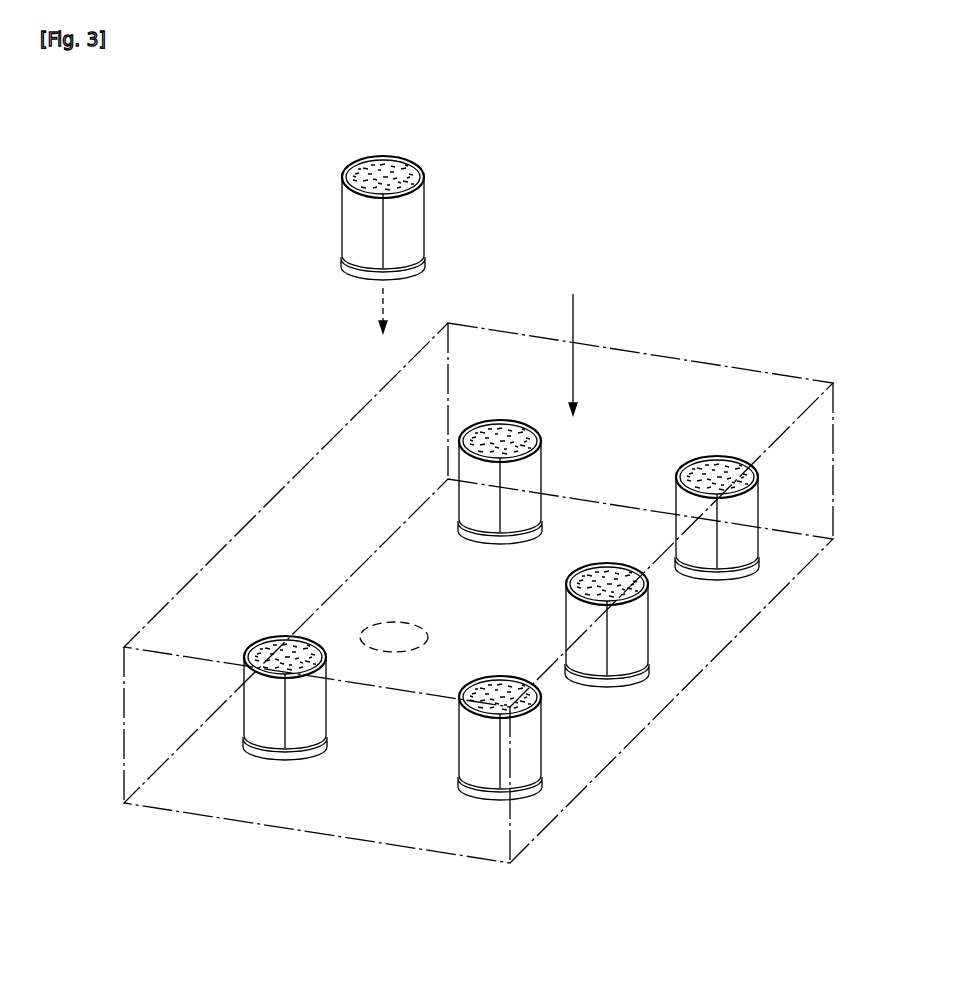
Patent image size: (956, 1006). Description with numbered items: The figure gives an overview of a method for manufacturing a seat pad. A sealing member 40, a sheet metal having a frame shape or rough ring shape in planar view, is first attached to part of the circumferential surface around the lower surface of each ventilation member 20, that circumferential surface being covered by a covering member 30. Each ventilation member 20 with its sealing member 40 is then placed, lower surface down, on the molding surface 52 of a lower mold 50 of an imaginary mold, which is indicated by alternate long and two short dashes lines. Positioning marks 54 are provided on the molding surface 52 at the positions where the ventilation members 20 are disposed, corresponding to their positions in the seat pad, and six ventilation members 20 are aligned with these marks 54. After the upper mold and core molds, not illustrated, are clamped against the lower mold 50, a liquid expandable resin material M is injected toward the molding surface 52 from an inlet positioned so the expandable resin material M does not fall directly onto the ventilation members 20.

The ventilation member 20 is at (384, 182).
The covering member 30 is at (415, 211).
The sealing member 40 is at (362, 272).
The lower mold 50 is at (652, 356).
The molding surface 52 is at (417, 580).
The positioning mark 54 is at (370, 627).
The expandable resin material M is at (573, 341).